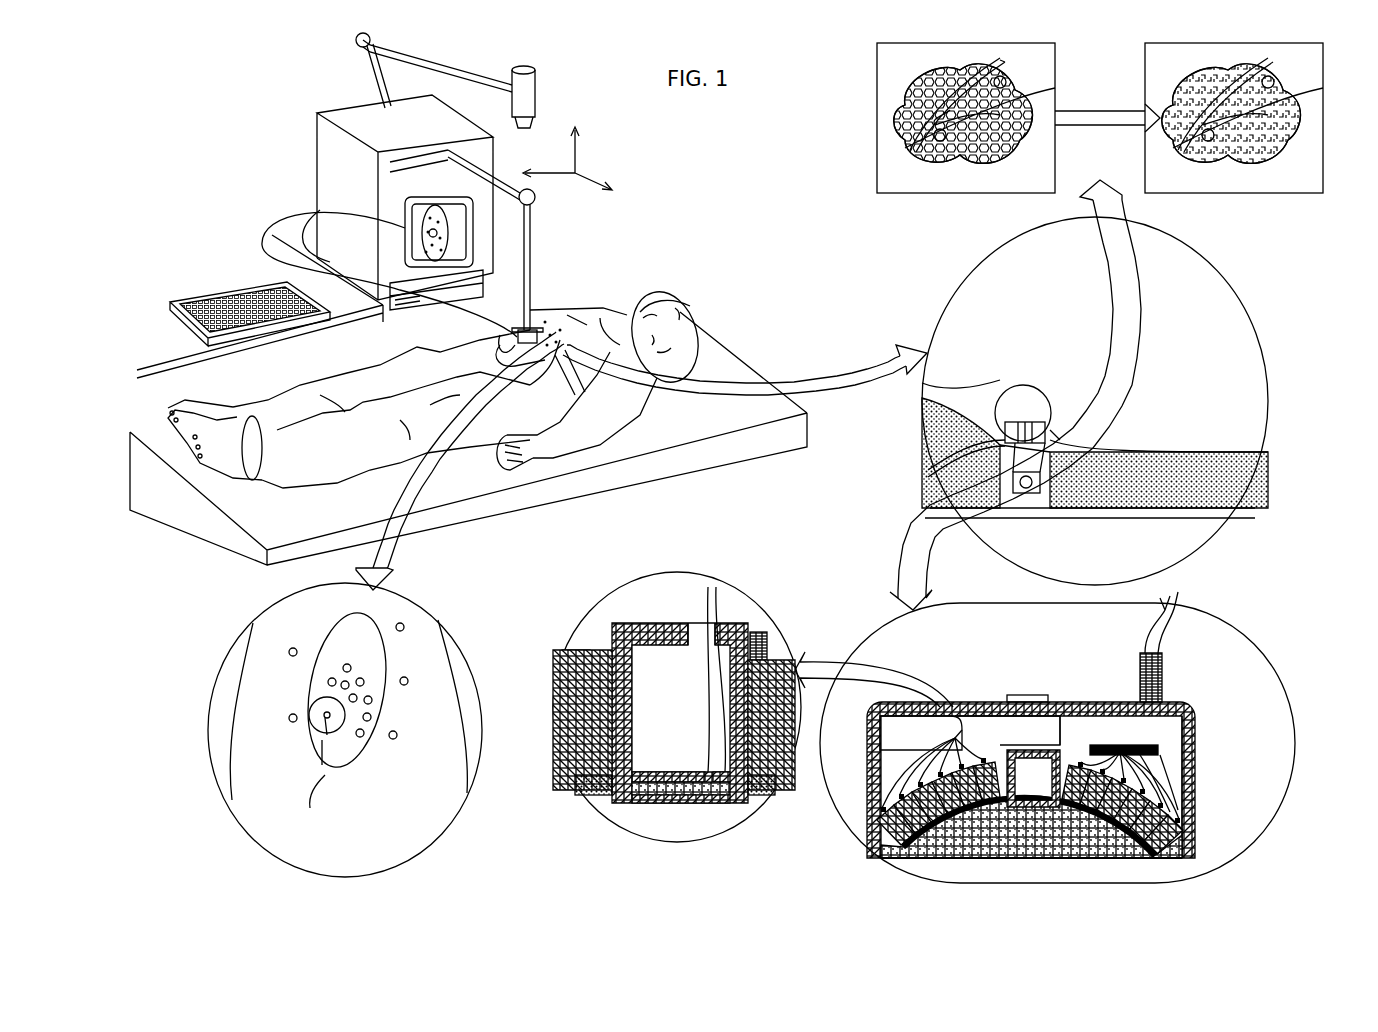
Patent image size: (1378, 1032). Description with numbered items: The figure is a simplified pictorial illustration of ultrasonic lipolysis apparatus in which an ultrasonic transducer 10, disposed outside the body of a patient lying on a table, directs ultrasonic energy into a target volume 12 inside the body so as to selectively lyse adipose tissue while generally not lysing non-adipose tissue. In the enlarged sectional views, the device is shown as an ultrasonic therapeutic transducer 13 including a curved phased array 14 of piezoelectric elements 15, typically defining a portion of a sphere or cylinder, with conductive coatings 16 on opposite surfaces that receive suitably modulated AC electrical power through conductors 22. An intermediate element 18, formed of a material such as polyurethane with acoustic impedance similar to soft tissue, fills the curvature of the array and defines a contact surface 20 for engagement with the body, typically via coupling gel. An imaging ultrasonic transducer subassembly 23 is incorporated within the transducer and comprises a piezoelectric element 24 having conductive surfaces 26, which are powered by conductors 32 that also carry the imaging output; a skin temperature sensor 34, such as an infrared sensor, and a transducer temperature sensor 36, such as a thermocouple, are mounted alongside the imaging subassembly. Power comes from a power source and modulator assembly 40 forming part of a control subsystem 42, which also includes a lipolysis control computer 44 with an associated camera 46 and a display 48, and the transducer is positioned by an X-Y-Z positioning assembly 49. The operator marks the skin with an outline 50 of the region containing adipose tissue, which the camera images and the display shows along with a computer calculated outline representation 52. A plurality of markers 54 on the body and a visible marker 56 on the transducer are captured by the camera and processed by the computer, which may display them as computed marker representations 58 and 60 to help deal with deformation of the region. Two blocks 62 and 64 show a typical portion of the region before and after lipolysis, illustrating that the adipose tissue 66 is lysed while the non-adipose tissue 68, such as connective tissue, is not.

The ultrasonic transducer 10 is at (540, 325).
The target volume 12 is at (1034, 503).
The ultrasonic therapeutic transducer 13 is at (1184, 742).
The curved phased array 14 is at (985, 830).
The piezoelectric elements 15 is at (766, 770).
The conductive coatings 16 is at (798, 650).
The intermediate element 18 is at (1005, 830).
The contact surface 20 is at (1110, 858).
The conductors 22 is at (1170, 773).
The imaging ultrasonic transducer subassembly 23 is at (621, 598).
The piezoelectric element 24 is at (654, 777).
The conductive surfaces 26 is at (660, 772).
The conductors 32 is at (708, 622).
The skin temperature sensor 34 is at (750, 810).
The transducer temperature sensor 36 is at (770, 640).
The power source and modulator assembly 40 is at (490, 252).
The control subsystem 42 is at (313, 124).
The lipolysis control computer 44 is at (479, 295).
The camera 46 is at (540, 74).
The display 48 is at (405, 207).
The X-Y-Z positioning assembly 49 is at (585, 212).
The outline 50 is at (586, 326).
The computer calculated outline representation 52 is at (423, 196).
The markers 54 is at (500, 384).
The visible marker 56 is at (1025, 389).
The computed marker representation 58 is at (531, 230).
The computed marker representation 60 is at (331, 202).
The block 62 is at (1056, 66).
The block 64 is at (1322, 63).
The adipose tissue 66 is at (932, 102).
The non-adipose tissue 68 is at (993, 142).